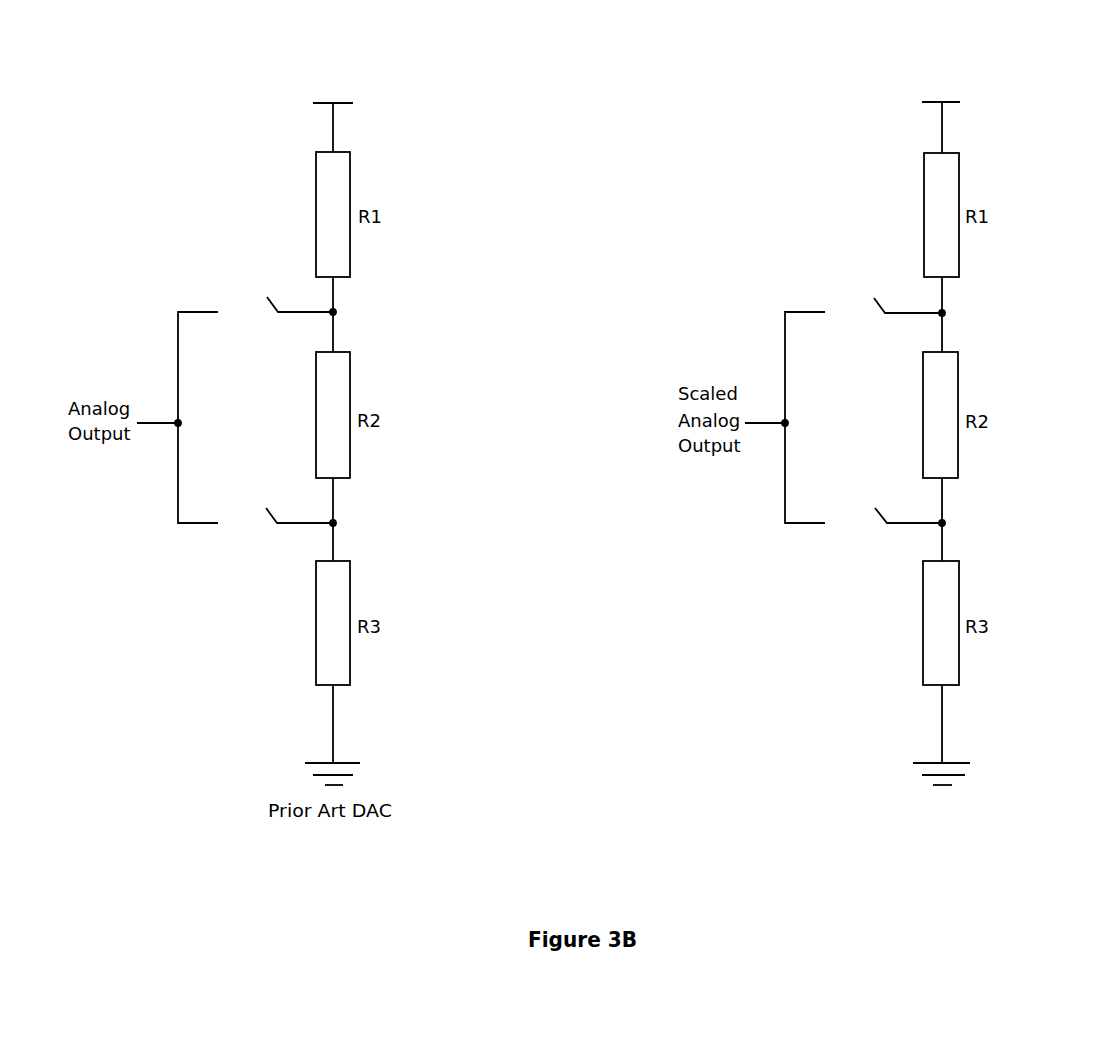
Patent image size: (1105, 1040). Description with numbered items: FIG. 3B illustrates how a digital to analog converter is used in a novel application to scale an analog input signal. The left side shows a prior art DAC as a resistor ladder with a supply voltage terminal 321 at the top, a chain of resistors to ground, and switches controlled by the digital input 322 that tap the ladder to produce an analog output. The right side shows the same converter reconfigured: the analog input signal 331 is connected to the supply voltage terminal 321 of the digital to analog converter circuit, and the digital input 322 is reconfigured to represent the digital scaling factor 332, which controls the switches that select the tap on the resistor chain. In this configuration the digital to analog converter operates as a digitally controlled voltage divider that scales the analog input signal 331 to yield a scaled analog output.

The supply voltage terminal 321 is at (404, 89).
The digital input 322 is at (266, 277).
The analog input signal 331 is at (997, 88).
The digital scaling factor 332 is at (874, 280).